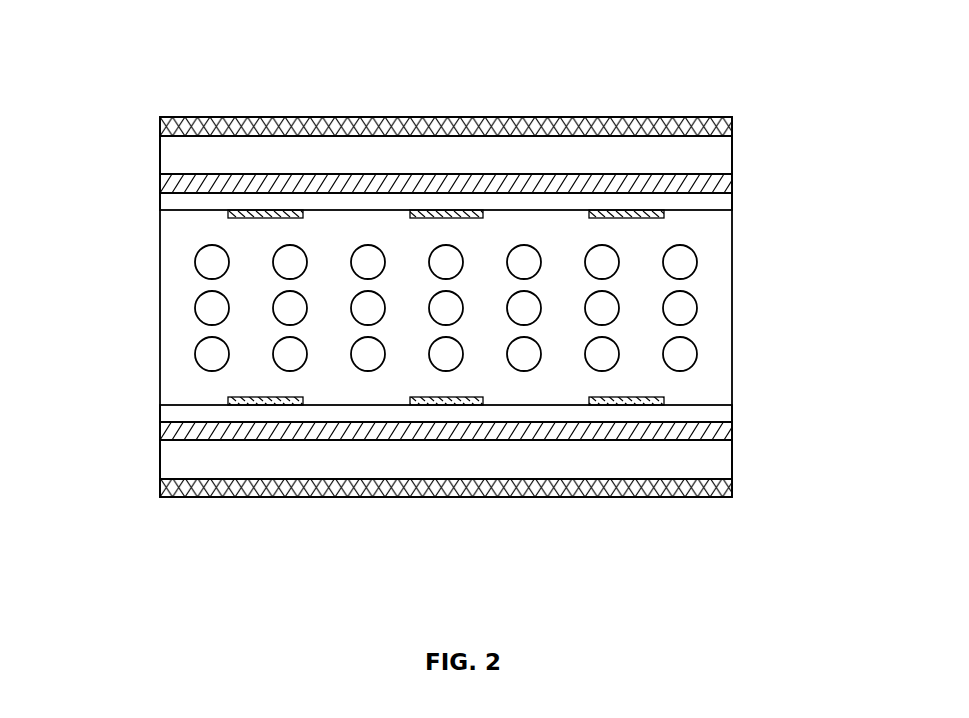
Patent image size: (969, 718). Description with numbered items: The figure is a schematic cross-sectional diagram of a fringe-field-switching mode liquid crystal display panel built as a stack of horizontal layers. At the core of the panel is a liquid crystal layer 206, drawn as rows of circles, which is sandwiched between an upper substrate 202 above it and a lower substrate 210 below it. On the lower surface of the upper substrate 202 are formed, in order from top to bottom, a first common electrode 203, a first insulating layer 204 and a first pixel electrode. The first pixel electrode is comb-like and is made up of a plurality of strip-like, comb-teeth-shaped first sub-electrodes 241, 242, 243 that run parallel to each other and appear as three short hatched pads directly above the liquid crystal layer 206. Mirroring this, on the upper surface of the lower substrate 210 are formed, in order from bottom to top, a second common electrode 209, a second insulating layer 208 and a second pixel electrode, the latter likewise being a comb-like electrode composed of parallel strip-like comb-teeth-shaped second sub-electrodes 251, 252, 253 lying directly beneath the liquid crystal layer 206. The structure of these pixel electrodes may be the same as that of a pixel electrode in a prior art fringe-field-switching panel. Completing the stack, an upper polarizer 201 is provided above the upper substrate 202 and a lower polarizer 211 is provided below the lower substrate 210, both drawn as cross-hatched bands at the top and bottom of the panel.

The upper polarizer 201 is at (732, 126).
The upper substrate 202 is at (732, 154).
The first common electrode 203 is at (732, 183).
The first insulating layer 204 is at (732, 203).
The liquid crystal layer 206 is at (698, 310).
The second insulating layer 208 is at (732, 410).
The second common electrode 209 is at (732, 435).
The lower substrate 210 is at (732, 462).
The lower polarizer 211 is at (732, 490).
The first sub-electrode 241 is at (265, 218).
The first sub-electrode 242 is at (432, 213).
The first sub-electrode 243 is at (664, 218).
The second sub-electrode 251 is at (265, 400).
The second sub-electrode 252 is at (445, 400).
The second sub-electrode 253 is at (612, 400).